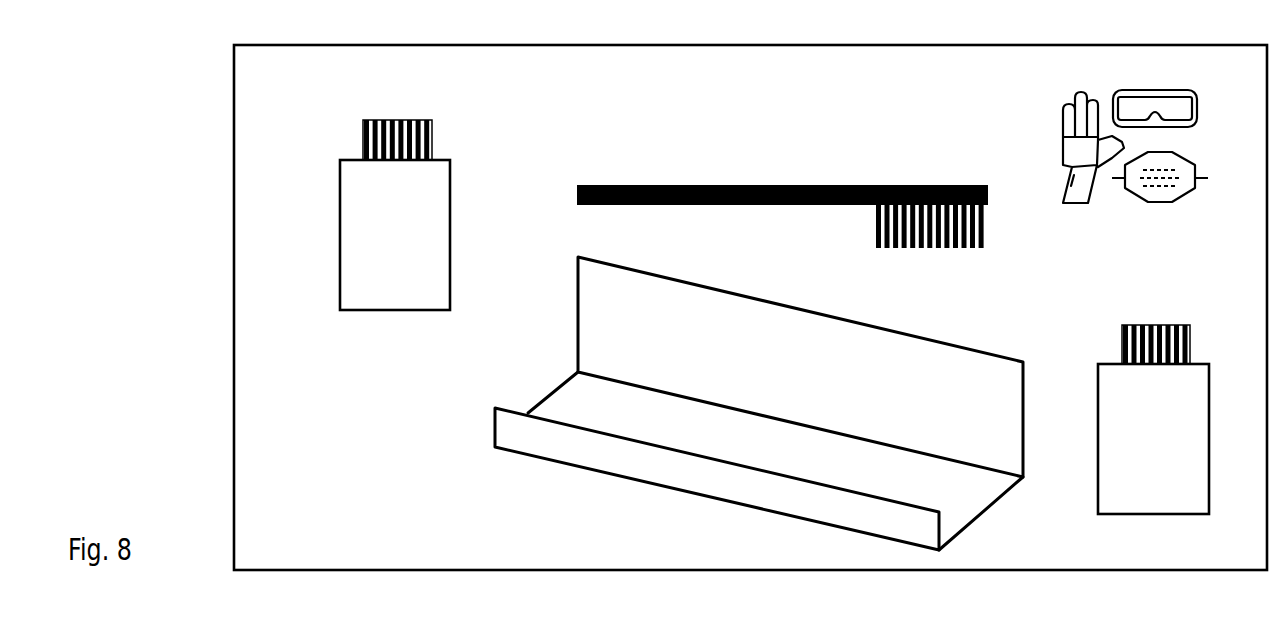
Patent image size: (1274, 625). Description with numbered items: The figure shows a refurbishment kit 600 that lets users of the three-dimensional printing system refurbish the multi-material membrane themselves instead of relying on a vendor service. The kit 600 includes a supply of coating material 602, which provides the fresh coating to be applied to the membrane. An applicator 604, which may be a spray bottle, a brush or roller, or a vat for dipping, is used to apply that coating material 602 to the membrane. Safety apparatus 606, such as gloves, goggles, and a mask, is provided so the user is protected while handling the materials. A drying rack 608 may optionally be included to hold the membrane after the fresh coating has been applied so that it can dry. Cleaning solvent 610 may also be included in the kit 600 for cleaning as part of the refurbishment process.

The refurbishment kit 600 is at (316, 545).
The supply of coating material 602 is at (417, 290).
The applicator 604 is at (810, 185).
The safety apparatus 606 is at (1130, 220).
The drying rack 608 is at (826, 387).
The cleaning solvent 610 is at (1177, 495).